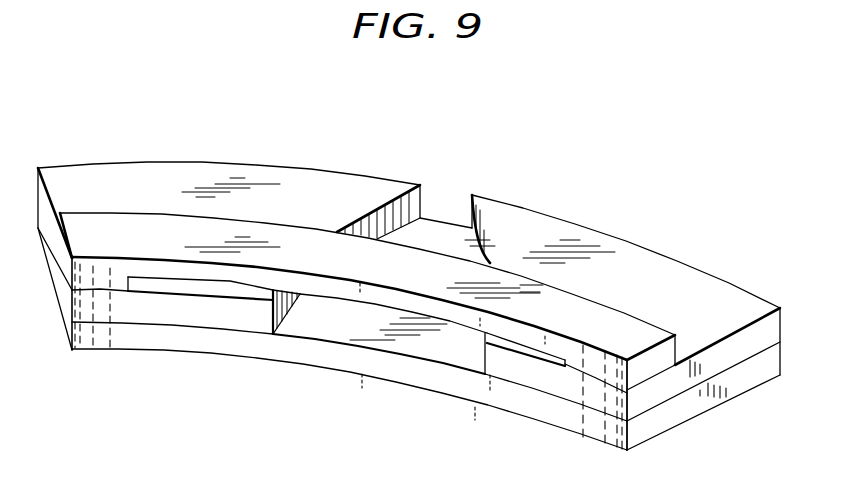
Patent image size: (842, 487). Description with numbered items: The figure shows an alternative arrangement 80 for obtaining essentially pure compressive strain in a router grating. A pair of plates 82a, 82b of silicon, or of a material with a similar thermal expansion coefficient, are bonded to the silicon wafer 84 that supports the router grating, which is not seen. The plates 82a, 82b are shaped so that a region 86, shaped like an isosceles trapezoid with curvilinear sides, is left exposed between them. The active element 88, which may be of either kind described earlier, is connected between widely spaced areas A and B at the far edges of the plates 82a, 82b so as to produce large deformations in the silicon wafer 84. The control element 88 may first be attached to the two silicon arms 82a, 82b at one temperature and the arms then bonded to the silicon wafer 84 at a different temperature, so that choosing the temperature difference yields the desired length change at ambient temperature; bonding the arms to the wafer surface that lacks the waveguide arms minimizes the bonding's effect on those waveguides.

The alternative arrangement 80 is at (222, 404).
The plate 82a is at (127, 177).
The plate 82b is at (672, 278).
The silicon wafer 84 is at (690, 418).
The region 86 is at (433, 345).
The active element 88 is at (425, 265).
The area A is at (118, 284).
The area B is at (557, 367).